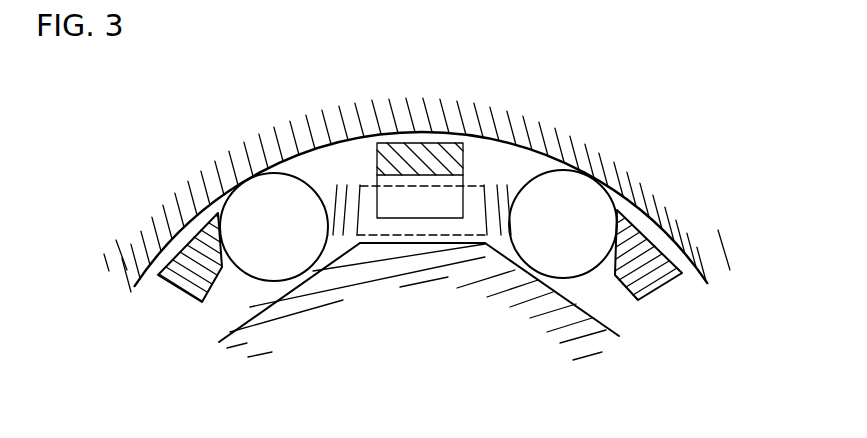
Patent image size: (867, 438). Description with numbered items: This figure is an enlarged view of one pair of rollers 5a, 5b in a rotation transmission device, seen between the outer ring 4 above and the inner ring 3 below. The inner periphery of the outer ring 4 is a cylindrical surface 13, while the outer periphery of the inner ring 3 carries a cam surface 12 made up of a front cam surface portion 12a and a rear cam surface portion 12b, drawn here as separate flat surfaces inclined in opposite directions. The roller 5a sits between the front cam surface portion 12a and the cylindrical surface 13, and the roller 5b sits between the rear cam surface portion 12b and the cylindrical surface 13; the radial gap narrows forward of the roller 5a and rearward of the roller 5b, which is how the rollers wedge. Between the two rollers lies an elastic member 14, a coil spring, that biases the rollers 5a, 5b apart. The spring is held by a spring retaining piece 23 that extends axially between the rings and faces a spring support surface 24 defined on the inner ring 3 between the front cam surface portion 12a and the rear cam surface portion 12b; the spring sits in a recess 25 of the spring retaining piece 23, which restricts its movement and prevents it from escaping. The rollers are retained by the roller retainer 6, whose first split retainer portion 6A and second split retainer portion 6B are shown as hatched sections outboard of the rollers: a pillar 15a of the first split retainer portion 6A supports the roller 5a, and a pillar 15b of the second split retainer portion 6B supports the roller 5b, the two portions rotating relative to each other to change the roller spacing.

The inner ring 3 is at (403, 234).
The outer ring 4 is at (406, 188).
The roller 5a is at (563, 186).
The roller 5b is at (253, 204).
The roller retainer 6 is at (420, 266).
The first split retainer portion 6A is at (660, 258).
The second split retainer portion 6B is at (172, 257).
The cam surface 12 is at (419, 226).
The front cam surface portion 12a is at (568, 298).
The rear cam surface portion 12b is at (280, 280).
The cylindrical surface 13 is at (508, 146).
The elastic member 14 is at (412, 200).
The pillar 15a is at (664, 212).
The pillar 15b is at (182, 211).
The spring retaining piece 23 is at (418, 155).
The spring support surface 24 is at (415, 245).
The recess 25 is at (440, 185).